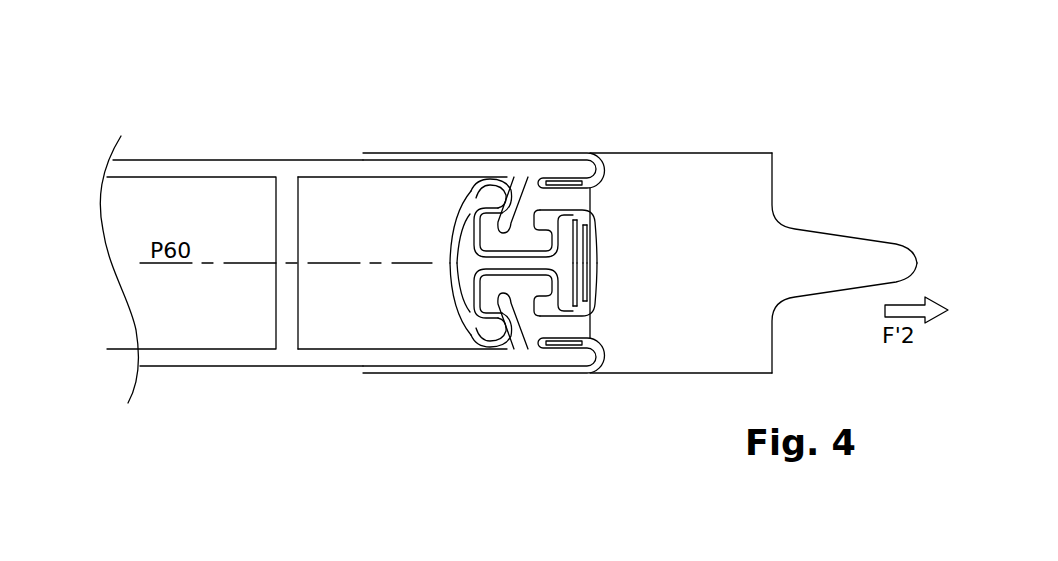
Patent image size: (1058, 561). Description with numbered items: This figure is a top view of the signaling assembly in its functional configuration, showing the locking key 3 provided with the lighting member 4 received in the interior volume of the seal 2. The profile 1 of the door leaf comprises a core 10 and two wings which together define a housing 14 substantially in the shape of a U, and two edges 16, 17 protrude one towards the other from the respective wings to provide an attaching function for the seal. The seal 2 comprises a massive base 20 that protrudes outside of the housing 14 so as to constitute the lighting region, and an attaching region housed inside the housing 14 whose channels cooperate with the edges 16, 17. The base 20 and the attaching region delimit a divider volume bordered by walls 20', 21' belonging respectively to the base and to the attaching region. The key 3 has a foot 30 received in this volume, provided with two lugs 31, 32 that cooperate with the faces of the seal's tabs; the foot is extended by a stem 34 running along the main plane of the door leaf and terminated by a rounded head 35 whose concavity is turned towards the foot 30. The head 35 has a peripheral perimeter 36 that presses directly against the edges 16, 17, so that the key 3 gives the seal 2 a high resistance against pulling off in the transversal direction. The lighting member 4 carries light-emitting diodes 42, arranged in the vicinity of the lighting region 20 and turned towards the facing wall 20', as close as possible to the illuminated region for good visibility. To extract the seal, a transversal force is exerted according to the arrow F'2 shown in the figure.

The profile 1 is at (239, 119).
The seal 2 is at (830, 200).
The key 3 is at (457, 204).
The lighting member 4 is at (605, 316).
The core 10 is at (285, 240).
The housing 14 is at (402, 263).
The edge 16 is at (510, 208).
The edge 17 is at (510, 313).
The base 20 is at (681, 263).
The wall 20' is at (642, 263).
The wall 21' is at (484, 363).
The foot 30 is at (565, 259).
The lug 31 is at (548, 230).
The lug 32 is at (545, 306).
The stem 34 is at (477, 262).
The rounded head 35 is at (460, 257).
The peripheral perimeter 36 is at (490, 197).
The light-emitting diodes 42 is at (592, 281).